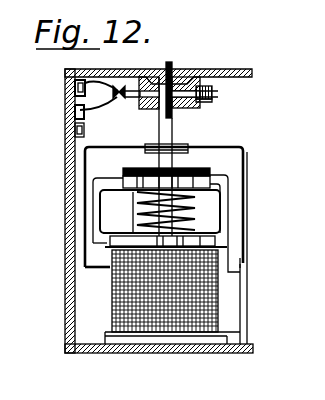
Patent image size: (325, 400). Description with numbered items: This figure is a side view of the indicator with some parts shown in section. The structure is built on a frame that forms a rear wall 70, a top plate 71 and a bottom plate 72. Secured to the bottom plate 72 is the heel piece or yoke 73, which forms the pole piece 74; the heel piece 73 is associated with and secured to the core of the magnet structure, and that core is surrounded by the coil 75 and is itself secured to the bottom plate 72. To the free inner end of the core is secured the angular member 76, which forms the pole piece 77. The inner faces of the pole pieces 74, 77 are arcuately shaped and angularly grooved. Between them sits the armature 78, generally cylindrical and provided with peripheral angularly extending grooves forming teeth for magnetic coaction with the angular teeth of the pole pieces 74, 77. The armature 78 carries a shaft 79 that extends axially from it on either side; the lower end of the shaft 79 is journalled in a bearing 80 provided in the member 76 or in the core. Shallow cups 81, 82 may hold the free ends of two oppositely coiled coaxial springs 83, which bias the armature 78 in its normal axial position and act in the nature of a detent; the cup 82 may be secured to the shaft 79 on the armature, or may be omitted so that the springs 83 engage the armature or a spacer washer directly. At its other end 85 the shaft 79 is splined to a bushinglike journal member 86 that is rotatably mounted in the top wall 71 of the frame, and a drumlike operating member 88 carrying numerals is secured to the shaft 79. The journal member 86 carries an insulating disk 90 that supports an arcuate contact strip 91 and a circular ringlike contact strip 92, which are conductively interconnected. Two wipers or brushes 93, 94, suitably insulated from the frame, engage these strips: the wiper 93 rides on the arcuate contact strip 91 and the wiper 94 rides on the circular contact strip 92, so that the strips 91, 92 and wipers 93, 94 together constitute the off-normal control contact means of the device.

The rear wall 70 is at (66, 159).
The top plate 71 is at (245, 69).
The bottom plate 72 is at (196, 353).
The heel piece 73 is at (232, 297).
The pole piece 74 is at (218, 183).
The coil 75 is at (120, 296).
The angular member 76 is at (212, 240).
The pole piece 77 is at (123, 182).
The armature 78 is at (205, 165).
The shaft 79 is at (173, 128).
The bearing 80 is at (241, 263).
The shallow cup 81 is at (133, 194).
The shallow cup 82 is at (135, 212).
The springs 83 is at (195, 210).
The end of the shaft 85 is at (170, 66).
The bushinglike journal member 86 is at (182, 77).
The drumlike operating member 88 is at (247, 152).
The insulating disk 90 is at (218, 95).
The arcuate contact strip 91 is at (213, 85).
The circular ringlike contact strip 92 is at (212, 104).
The wiper 93 is at (78, 92).
The wiper 94 is at (88, 109).